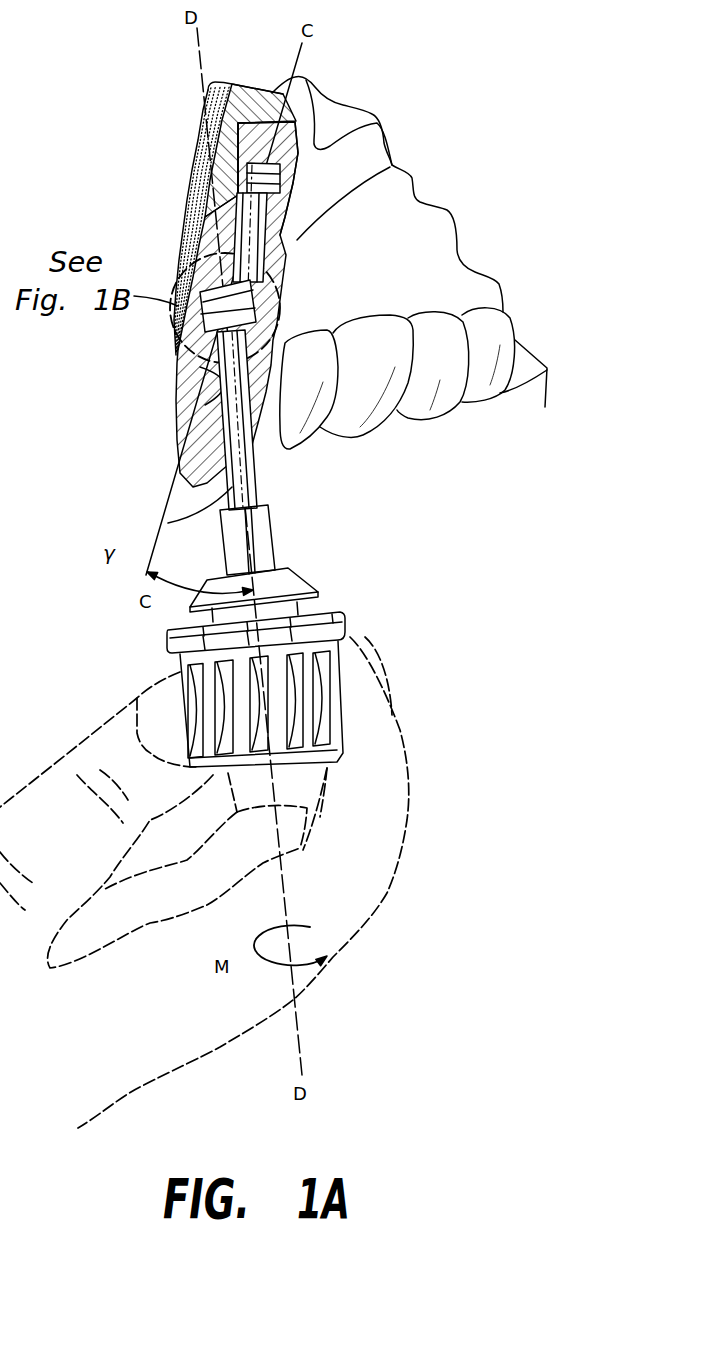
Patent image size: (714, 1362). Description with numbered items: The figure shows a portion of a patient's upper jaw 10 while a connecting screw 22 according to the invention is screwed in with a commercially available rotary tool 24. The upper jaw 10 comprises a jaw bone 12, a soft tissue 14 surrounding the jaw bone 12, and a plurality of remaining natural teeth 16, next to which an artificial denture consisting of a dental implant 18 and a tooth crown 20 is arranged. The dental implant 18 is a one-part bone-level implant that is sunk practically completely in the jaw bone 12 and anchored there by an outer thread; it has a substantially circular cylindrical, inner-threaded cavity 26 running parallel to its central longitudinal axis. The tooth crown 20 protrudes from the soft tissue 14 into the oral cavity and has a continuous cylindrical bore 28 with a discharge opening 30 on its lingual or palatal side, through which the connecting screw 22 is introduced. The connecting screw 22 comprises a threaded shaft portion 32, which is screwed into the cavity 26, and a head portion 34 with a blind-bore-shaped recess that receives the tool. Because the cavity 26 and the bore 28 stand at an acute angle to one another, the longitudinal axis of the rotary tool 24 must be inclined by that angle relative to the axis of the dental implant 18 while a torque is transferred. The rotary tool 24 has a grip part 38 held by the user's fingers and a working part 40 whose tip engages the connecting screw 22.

The upper jaw 10 is at (447, 210).
The jaw bone 12 is at (236, 82).
The soft tissue 14 is at (190, 236).
The natural teeth 16 is at (457, 407).
The dental implant 18 is at (286, 216).
The tooth crown 20 is at (178, 447).
The connecting screw 22 is at (281, 180).
The rotary tool 24 is at (303, 570).
The cavity 26 is at (237, 194).
The cylindrical bore 28 is at (200, 368).
The discharge opening 30 is at (258, 450).
The shaft portion 32 is at (262, 236).
The head portion 34 is at (252, 296).
The grip part 38 is at (340, 703).
The working part 40 is at (168, 522).